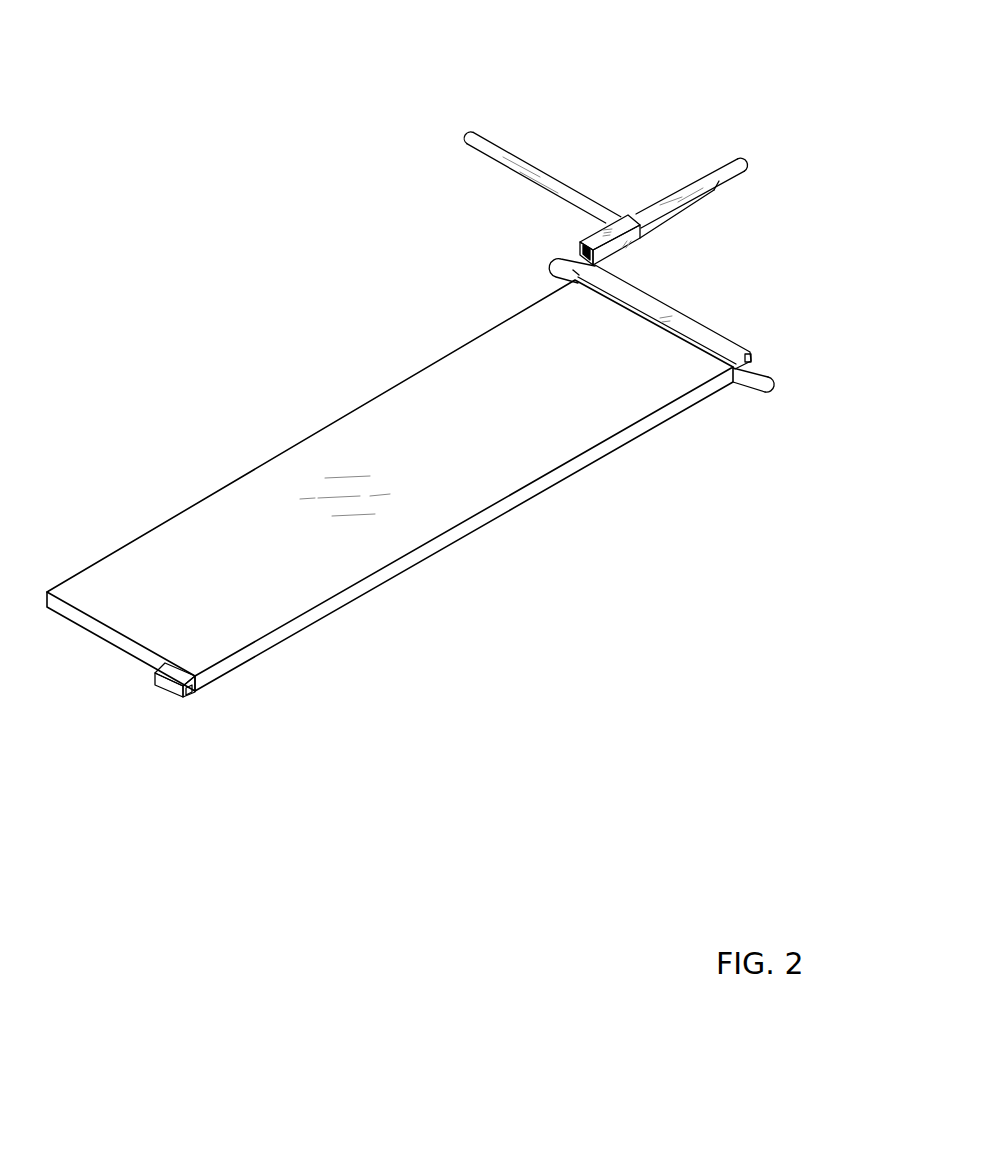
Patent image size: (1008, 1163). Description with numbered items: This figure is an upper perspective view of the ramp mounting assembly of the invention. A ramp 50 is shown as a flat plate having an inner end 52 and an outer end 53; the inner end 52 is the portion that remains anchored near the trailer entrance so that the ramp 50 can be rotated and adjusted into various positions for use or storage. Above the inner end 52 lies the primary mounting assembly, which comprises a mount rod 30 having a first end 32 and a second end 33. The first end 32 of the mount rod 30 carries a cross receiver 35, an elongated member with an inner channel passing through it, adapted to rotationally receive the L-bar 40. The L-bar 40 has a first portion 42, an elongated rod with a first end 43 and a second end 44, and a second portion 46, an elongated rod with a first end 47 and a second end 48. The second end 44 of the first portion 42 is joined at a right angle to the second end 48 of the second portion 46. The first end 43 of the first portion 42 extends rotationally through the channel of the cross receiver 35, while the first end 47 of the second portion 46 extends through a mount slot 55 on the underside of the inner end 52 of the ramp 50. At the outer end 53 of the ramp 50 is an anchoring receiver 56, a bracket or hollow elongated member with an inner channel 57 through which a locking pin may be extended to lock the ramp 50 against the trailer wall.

The mount rod 30 is at (527, 163).
The first end 32 is at (613, 212).
The second end 33 is at (464, 138).
The cross receiver 35 is at (650, 248).
The L-bar 40 is at (713, 168).
The first portion 42 is at (714, 192).
The first end 43 is at (745, 160).
The second end 44 is at (553, 250).
The second portion 46 is at (570, 288).
The first end 47 is at (768, 392).
The second end 48 is at (553, 267).
The ramp 50 is at (317, 432).
The inner end 52 is at (663, 300).
The outer end 53 is at (103, 632).
The mount slot 55 is at (752, 359).
The anchoring receiver 56 is at (170, 692).
The inner channel 57 is at (188, 700).